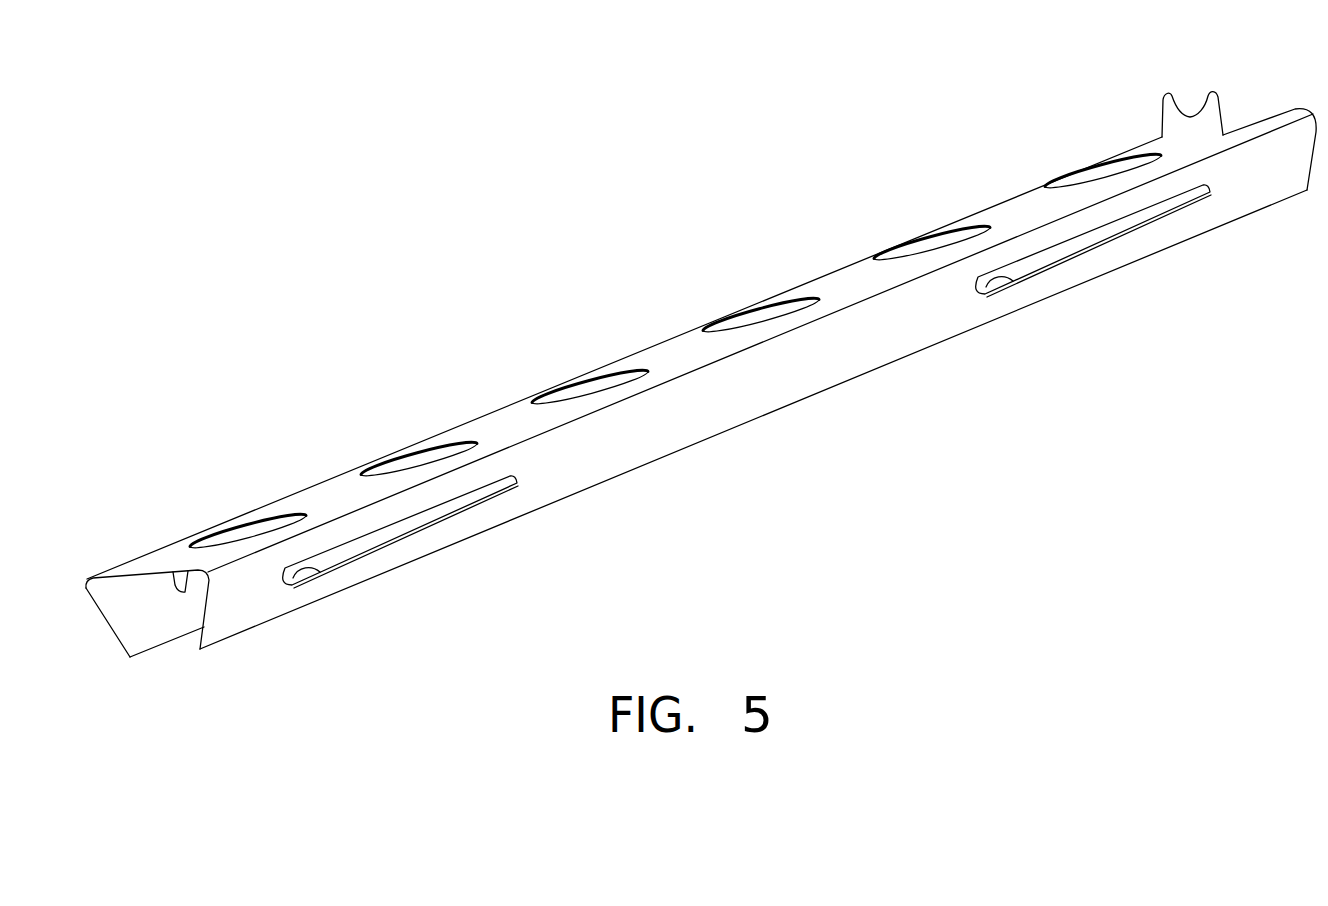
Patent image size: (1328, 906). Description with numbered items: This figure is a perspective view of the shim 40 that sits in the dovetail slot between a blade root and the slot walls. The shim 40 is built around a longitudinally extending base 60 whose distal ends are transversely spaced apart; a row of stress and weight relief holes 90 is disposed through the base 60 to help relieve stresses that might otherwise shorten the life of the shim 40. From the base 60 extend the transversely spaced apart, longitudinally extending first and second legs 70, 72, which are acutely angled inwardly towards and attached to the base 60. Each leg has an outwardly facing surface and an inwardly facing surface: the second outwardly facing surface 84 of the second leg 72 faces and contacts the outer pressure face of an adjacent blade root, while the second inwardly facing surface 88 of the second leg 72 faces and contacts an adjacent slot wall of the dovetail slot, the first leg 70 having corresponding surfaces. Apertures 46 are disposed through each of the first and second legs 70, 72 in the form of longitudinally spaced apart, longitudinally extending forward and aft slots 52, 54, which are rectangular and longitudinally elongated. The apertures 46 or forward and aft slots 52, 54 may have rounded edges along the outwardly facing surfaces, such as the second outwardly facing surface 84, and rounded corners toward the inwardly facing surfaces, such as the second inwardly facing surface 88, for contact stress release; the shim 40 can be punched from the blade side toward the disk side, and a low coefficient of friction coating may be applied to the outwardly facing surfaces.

The shim 40 is at (692, 499).
The apertures 46 is at (185, 592).
The forward slot 52 is at (455, 508).
The aft slot 54 is at (1003, 276).
The base 60 is at (676, 350).
The first leg 70 is at (433, 555).
The second leg 72 is at (146, 648).
The second outwardly facing surface 84 is at (830, 350).
The second inwardly facing surface 88 is at (116, 603).
The stress and weight relief holes 90 is at (553, 372).